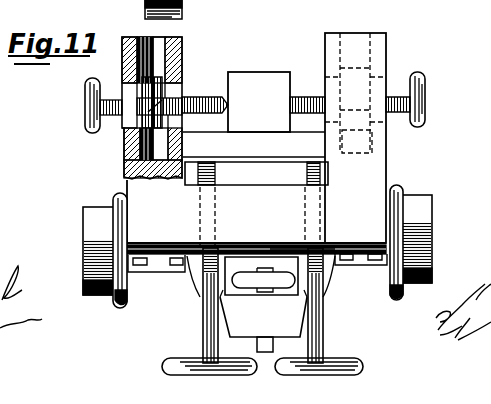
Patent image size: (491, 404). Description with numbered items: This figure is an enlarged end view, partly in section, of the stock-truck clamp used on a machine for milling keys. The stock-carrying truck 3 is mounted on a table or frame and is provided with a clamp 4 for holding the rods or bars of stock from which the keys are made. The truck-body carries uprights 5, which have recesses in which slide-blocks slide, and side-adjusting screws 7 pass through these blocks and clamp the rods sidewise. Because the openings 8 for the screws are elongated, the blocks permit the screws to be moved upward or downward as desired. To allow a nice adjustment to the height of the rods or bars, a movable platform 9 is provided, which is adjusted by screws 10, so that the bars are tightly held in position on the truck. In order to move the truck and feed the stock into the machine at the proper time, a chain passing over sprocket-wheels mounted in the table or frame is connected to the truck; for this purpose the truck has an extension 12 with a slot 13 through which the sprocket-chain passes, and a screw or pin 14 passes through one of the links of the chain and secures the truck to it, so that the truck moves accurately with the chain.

The stock-carrying truck 3 is at (257, 244).
The clamp 4 is at (88, 36).
The uprights 5 is at (123, 152).
The side-adjusting screws 7 is at (438, 112).
The openings 8 is at (173, 88).
The movable platform 9 is at (255, 128).
The screws 10 is at (333, 317).
The extension 12 is at (267, 253).
The slot 13 is at (248, 295).
The screw or pin 14 is at (272, 344).